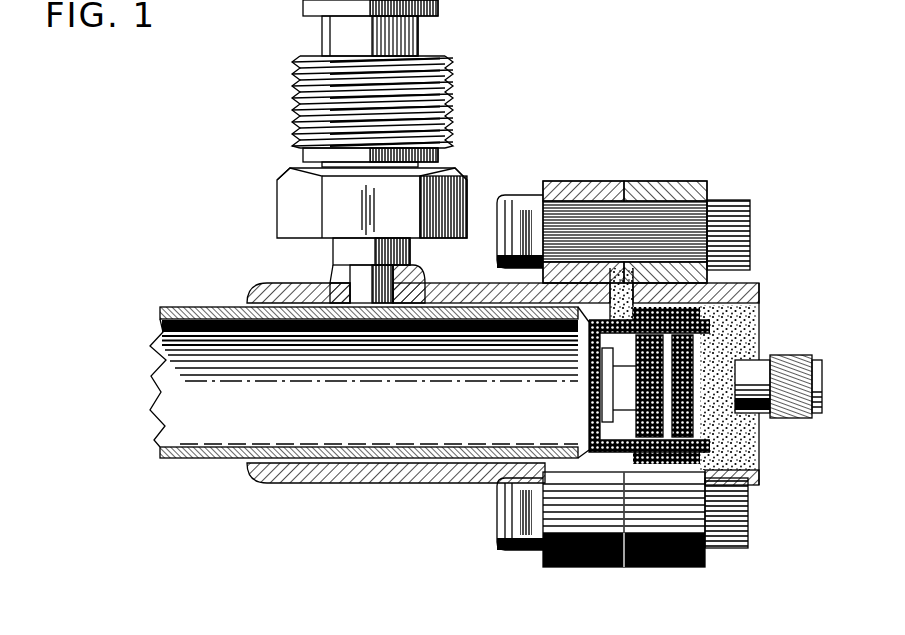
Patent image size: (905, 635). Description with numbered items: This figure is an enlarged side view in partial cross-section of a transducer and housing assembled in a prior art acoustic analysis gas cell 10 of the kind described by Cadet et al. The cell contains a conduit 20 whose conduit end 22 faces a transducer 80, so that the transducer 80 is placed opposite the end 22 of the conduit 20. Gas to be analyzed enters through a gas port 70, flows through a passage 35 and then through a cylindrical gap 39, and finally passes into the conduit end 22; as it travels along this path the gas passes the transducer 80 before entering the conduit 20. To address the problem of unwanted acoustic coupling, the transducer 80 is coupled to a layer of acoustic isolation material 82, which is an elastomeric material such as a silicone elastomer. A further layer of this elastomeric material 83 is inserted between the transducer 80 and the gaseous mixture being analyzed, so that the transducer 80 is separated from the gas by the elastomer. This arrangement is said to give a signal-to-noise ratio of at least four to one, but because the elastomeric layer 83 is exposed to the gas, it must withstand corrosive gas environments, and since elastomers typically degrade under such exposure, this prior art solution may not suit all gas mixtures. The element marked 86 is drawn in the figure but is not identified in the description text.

The acoustic analysis gas cell 10 is at (125, 312).
The conduit 20 is at (178, 406).
The conduit end 22 is at (590, 283).
The passage 35 is at (340, 287).
The cylindrical gap 39 is at (477, 283).
The gas port 70 is at (468, 57).
The transducer 80 is at (592, 393).
The acoustic isolation material 82 is at (740, 446).
The elastomeric material layer 83 is at (592, 427).
The contact pin 86 is at (705, 415).